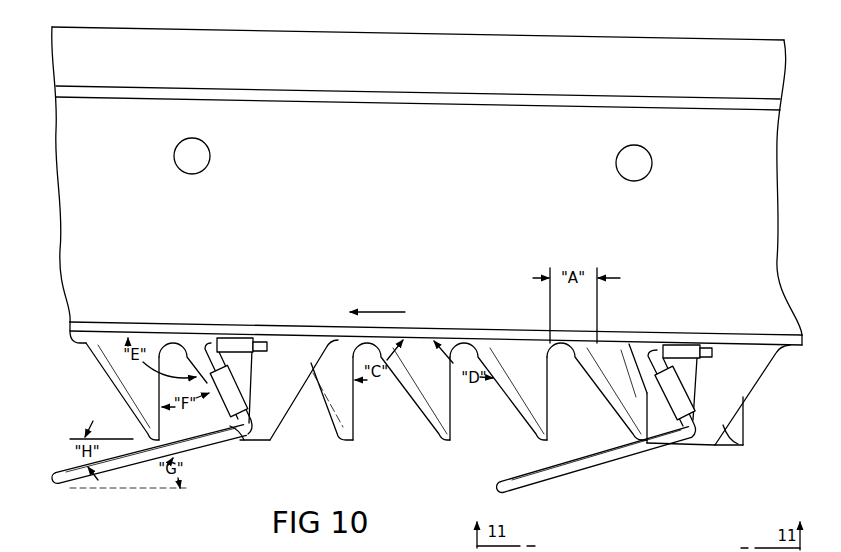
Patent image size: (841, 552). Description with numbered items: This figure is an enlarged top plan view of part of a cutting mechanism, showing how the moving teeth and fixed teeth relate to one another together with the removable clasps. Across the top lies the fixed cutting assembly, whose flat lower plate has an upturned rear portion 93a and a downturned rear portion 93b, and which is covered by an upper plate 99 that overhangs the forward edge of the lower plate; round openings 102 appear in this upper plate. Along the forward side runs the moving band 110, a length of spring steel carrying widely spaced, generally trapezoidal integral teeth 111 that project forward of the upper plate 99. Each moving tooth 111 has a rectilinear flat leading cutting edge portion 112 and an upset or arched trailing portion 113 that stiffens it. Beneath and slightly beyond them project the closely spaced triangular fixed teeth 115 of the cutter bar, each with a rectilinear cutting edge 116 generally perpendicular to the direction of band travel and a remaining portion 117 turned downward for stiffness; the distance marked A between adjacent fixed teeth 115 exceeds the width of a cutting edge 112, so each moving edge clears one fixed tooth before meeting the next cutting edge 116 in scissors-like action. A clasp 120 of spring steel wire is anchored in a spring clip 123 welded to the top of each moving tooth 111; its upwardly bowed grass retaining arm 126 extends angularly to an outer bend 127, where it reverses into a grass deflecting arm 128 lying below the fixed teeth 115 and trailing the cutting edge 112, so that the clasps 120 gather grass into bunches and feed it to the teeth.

The upturned rear portion 93a is at (143, 90).
The downturned rear portion 93b is at (305, 37).
The upper plate 99 is at (457, 118).
The holes 102 is at (212, 157).
The band 110 is at (86, 322).
The tooth 111 is at (257, 388).
The cutting edge portion 112 is at (241, 441).
The upset trailing portion 113 is at (268, 431).
The fixed tooth 115 is at (131, 391).
The cutting edge 116 is at (162, 366).
The downwardly turned portion 117 is at (107, 378).
The clasp 120 is at (640, 479).
The spring clip 123 is at (239, 367).
The grass retaining arm 126 is at (199, 450).
The outer bend 127 is at (56, 485).
The grass deflecting arm 128 is at (72, 468).